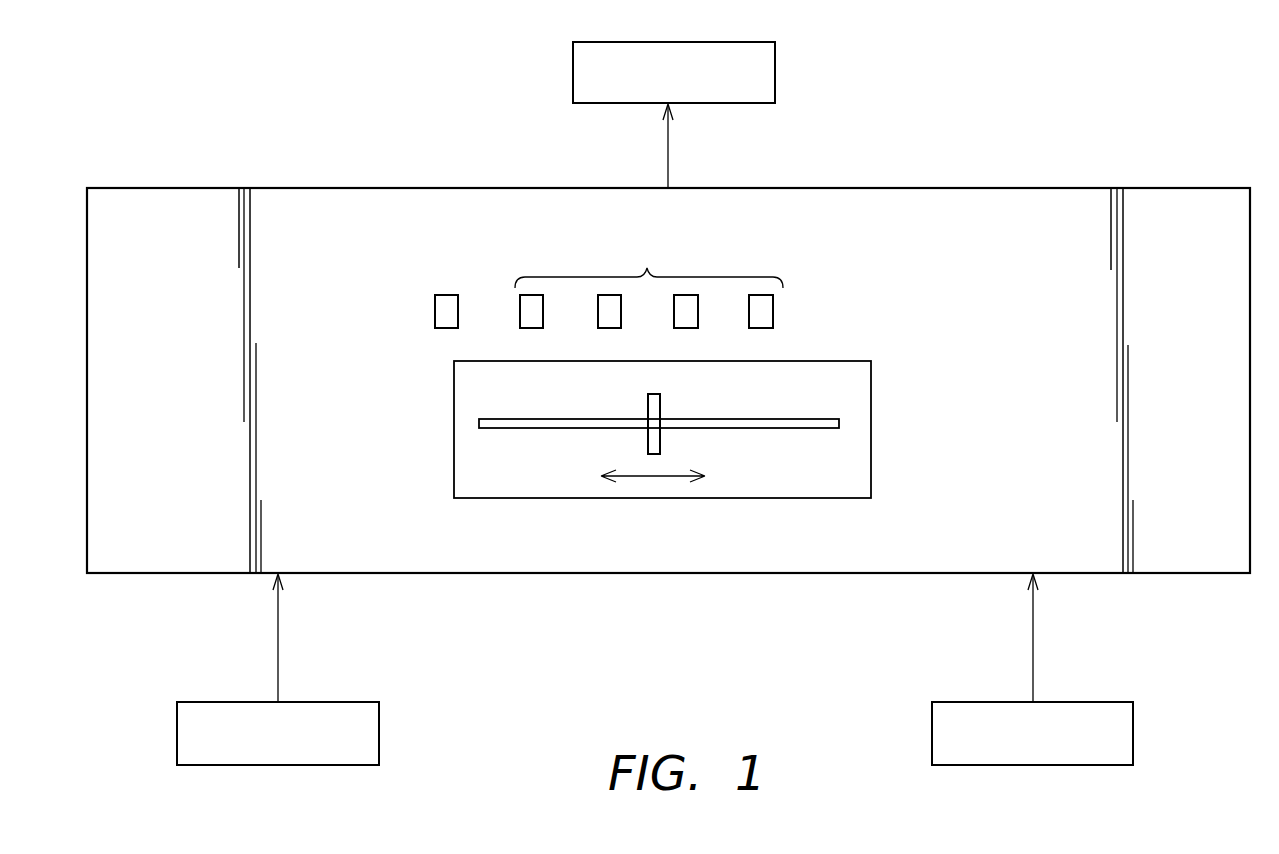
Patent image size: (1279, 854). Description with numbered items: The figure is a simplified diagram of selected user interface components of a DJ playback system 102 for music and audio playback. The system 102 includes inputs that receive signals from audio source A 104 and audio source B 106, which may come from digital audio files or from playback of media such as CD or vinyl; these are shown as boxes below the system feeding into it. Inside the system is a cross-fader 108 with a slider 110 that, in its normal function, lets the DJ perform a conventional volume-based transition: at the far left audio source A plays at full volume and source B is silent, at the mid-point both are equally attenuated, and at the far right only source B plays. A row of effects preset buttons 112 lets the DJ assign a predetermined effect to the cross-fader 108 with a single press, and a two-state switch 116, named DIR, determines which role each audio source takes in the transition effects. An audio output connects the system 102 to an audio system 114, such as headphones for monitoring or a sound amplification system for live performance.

The DJ playback system 102 is at (1032, 65).
The audio source A 104 is at (352, 702).
The audio source B 106 is at (1112, 702).
The cross-fader 108 is at (868, 361).
The slider 110 is at (648, 408).
The effects preset buttons 112 is at (647, 268).
The audio system 114 is at (771, 42).
The switch 116 is at (445, 295).